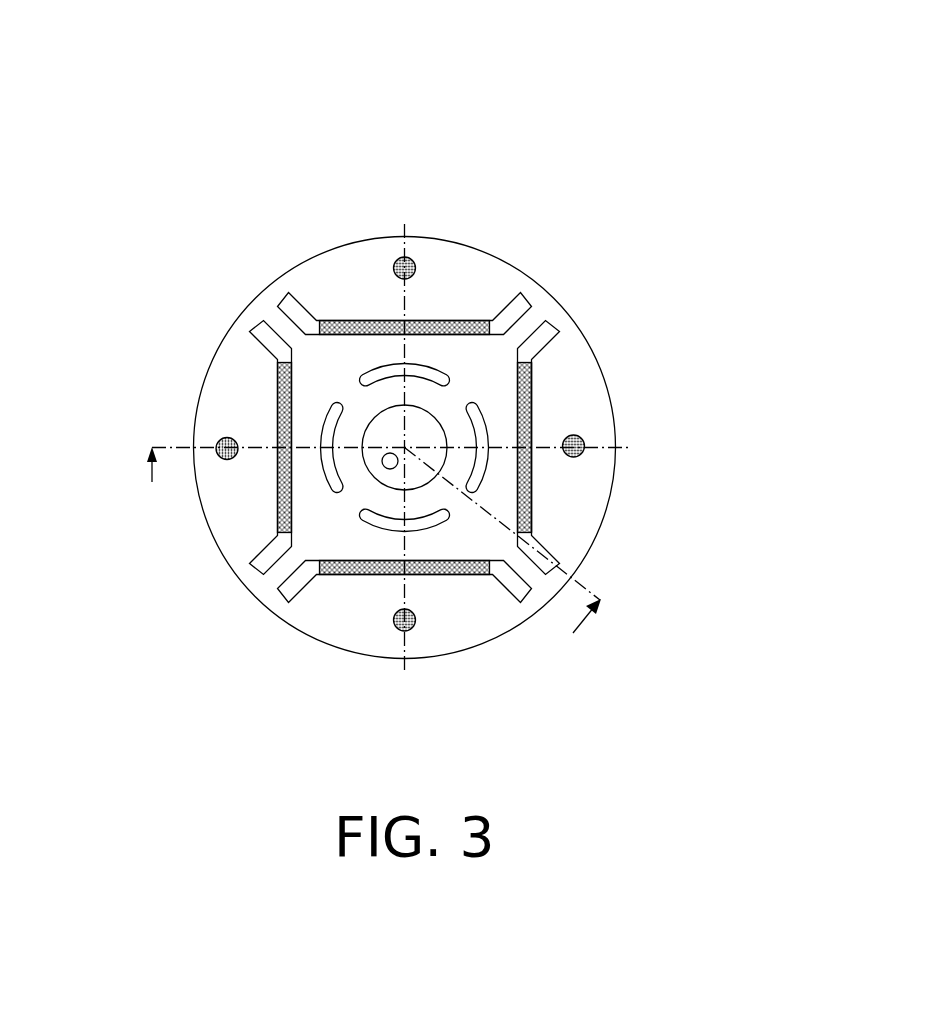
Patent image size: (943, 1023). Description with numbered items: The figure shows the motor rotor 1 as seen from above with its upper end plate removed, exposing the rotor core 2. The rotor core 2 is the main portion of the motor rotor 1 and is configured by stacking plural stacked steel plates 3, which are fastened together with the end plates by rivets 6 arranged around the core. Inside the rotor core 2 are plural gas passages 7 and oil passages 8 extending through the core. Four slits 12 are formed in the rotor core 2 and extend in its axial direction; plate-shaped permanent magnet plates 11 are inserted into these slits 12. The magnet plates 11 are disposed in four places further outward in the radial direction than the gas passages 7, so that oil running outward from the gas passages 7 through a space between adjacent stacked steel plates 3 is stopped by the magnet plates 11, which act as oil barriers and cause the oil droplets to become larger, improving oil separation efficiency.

The motor rotor 1 is at (514, 148).
The rotor core 2 is at (507, 262).
The stacked steel plates 3 is at (323, 250).
The rivets 6 is at (219, 441).
The gas passages 7 is at (482, 421).
The oil passages 8 is at (540, 340).
The magnet plates 11 is at (529, 462).
The slits 12 is at (533, 482).